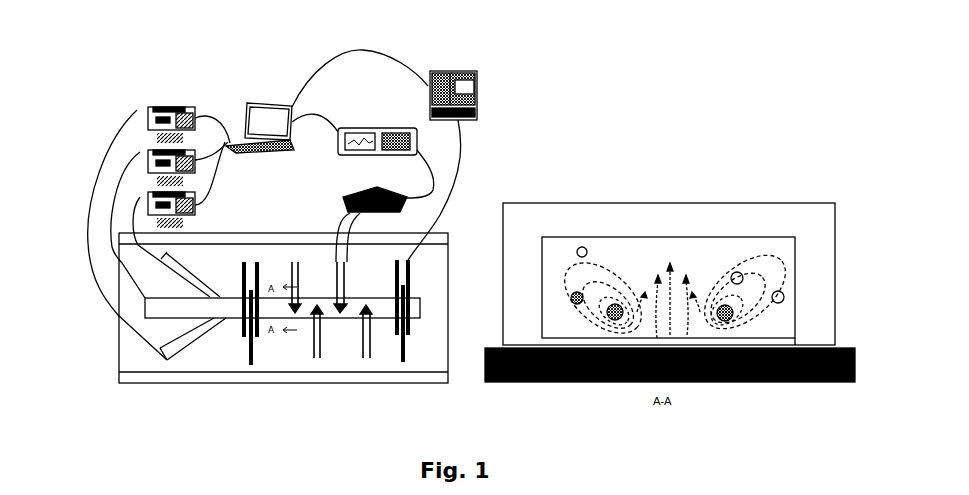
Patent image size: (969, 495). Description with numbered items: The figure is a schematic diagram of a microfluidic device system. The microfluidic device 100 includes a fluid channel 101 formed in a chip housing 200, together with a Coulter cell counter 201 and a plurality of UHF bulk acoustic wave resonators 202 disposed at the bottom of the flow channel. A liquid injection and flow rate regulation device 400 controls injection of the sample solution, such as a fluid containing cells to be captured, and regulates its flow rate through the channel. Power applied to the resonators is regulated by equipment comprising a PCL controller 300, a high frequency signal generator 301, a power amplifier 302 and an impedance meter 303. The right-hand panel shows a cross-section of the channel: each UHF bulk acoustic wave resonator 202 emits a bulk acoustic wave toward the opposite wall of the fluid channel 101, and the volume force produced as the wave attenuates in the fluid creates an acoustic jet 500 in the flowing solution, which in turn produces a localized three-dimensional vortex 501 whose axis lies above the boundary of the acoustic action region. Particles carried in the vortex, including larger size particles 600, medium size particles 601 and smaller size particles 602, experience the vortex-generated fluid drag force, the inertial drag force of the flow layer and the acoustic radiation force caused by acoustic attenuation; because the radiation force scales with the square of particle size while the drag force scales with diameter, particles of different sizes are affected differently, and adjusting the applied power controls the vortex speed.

The microfluidic device 100 is at (392, 253).
The fluid channel 101 is at (212, 297).
The chip housing 200 is at (172, 377).
The Coulter cell counter 201 is at (247, 345).
The UHF bulk acoustic wave resonator 202 is at (333, 292).
The PCL controller 300 is at (263, 98).
The high frequency signal generator 301 is at (377, 124).
The power amplifier 302 is at (340, 197).
The impedance meter 303 is at (449, 71).
The liquid injection and flow rate regulation device 400 is at (138, 190).
The acoustic jet 500 is at (668, 288).
The vortex 501 is at (783, 297).
The larger size particles 600 is at (634, 280).
The medium size particles 601 is at (570, 302).
The smaller size particles 602 is at (577, 248).